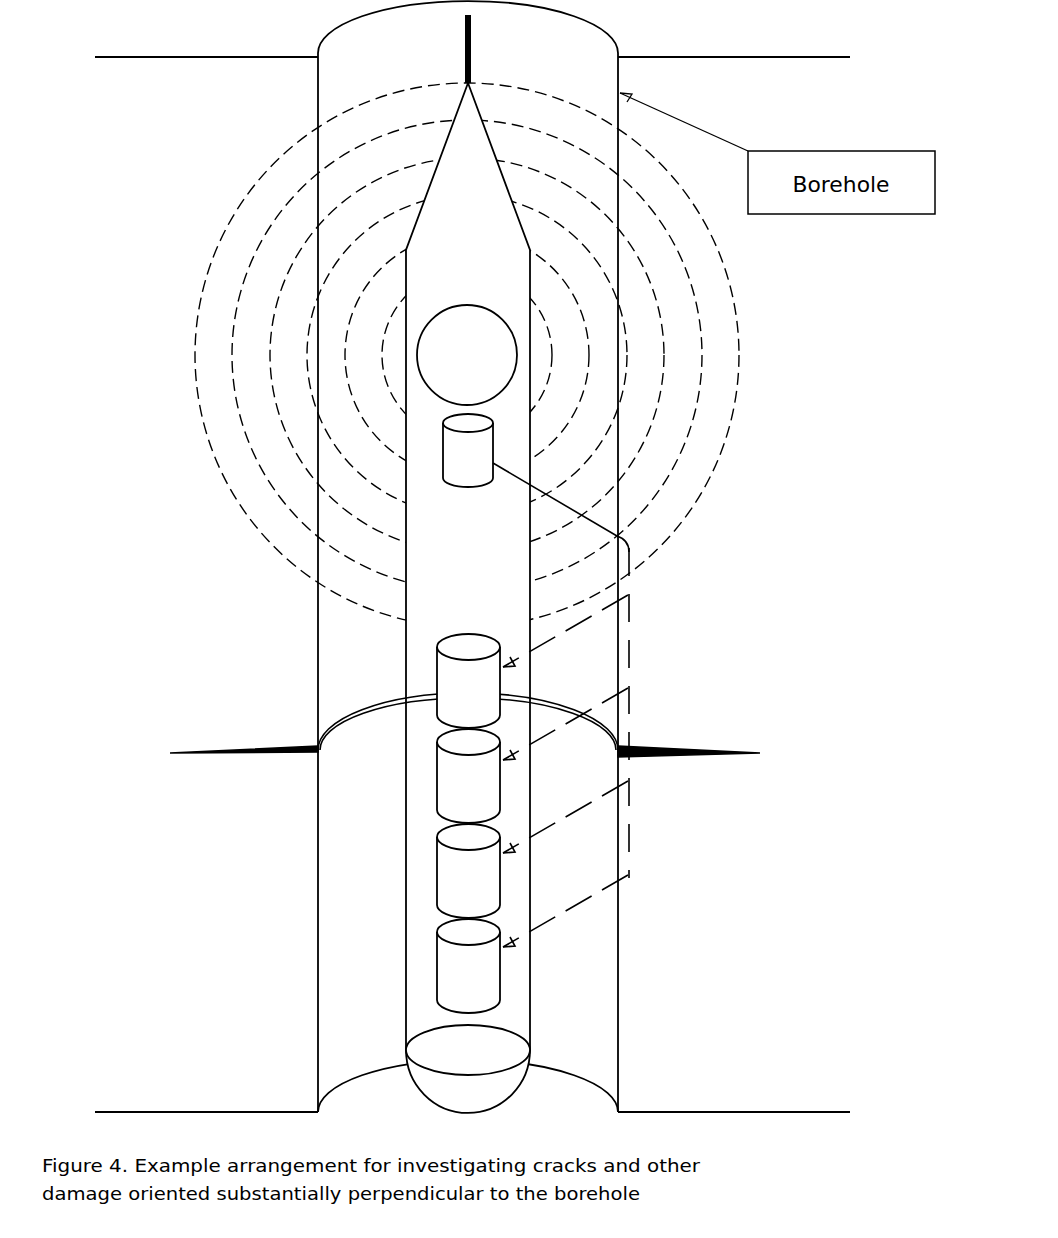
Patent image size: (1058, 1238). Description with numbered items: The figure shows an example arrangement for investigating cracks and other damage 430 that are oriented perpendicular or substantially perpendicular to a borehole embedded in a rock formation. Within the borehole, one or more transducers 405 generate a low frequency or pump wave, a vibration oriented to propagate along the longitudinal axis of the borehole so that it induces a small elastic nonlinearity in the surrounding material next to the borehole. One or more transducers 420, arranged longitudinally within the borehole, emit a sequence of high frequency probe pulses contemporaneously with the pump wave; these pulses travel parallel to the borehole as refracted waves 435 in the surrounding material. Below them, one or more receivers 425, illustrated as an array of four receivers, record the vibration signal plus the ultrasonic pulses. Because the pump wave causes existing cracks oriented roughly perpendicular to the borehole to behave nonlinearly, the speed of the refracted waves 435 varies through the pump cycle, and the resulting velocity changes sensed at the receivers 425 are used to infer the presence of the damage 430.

The transducer 405 is at (518, 356).
The transducer 420 is at (443, 460).
The receiver 425 is at (437, 712).
The damage 430 is at (700, 757).
The refracted waves 435 is at (632, 612).